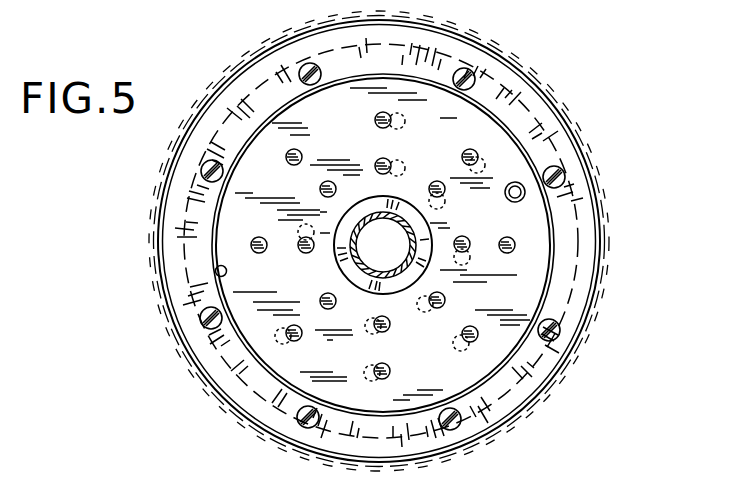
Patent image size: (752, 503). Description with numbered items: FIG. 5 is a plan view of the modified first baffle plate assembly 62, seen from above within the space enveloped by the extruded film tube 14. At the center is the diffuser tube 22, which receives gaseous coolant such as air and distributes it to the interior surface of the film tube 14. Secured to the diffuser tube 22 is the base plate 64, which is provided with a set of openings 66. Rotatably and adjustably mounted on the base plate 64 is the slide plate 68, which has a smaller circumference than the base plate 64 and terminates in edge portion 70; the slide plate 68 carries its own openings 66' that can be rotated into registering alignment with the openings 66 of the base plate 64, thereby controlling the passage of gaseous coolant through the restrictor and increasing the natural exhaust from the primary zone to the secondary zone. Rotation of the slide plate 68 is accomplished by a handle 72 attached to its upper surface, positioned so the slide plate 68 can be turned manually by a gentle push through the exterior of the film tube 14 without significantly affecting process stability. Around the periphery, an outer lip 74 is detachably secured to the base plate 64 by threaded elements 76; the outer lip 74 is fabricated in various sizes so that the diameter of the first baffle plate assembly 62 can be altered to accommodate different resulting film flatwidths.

The extruded film tube 14 is at (156, 207).
The diffuser tube 22 is at (415, 347).
The first baffle plate assembly 62 is at (293, 360).
The base plate 64 is at (497, 290).
The openings 66 is at (415, 121).
The openings 66' is at (354, 121).
The slide plate 68 is at (487, 142).
The edge portion 70 is at (222, 282).
The handle 72 is at (506, 197).
The outer lip 74 is at (252, 77).
The threaded elements 76 is at (566, 178).